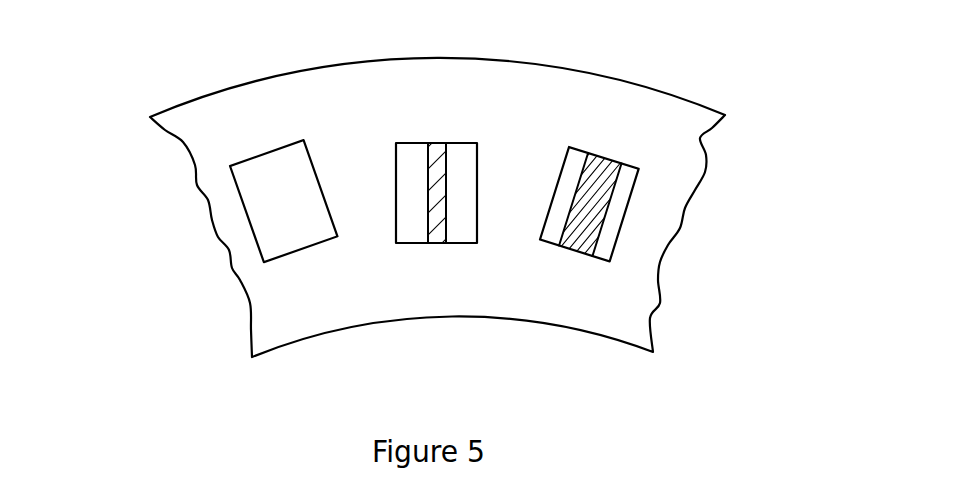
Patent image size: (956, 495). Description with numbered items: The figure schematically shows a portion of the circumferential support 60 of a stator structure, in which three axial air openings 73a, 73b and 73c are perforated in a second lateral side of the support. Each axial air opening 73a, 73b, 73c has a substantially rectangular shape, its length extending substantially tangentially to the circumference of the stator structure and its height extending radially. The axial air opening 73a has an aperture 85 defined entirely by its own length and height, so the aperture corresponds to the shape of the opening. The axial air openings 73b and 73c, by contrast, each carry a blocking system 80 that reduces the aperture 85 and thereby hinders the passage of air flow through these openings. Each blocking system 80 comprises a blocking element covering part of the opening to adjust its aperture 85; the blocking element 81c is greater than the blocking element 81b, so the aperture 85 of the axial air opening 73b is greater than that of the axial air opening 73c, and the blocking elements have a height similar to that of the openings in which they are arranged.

The circumferential support 60 is at (173, 115).
The axial air opening 73a is at (244, 207).
The axial air opening 73b is at (395, 157).
The axial air opening 73c is at (632, 202).
The blocking element 81b is at (478, 148).
The blocking element 81c is at (619, 246).
The aperture 85 is at (412, 163).
The blocking system 80 is at (397, 252).